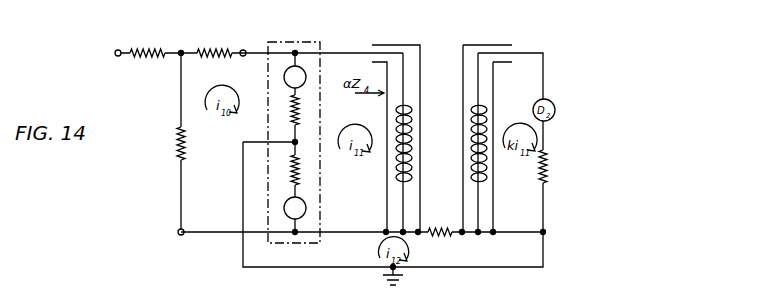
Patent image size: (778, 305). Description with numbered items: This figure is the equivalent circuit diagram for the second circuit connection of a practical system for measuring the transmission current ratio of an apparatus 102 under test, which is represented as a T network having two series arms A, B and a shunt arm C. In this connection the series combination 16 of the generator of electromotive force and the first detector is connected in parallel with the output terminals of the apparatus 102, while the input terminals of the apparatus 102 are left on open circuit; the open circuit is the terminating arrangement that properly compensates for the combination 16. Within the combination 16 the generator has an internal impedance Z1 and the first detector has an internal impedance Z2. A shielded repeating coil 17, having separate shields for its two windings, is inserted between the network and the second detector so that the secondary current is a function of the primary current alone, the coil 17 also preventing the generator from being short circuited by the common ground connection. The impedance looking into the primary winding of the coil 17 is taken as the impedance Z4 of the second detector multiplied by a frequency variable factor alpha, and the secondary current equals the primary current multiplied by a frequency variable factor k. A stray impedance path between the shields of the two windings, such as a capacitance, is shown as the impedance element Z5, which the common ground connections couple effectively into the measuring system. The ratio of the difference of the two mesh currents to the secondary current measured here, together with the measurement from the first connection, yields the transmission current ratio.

The apparatus to be tested 102 is at (205, 26).
The series combination of generator and first detector 16 is at (279, 41).
The shielded repeating coil 17 is at (458, 104).
The series arm of T network A is at (147, 41).
The series arm of T network B is at (214, 41).
The shunt arm of T network C is at (172, 145).
The internal impedance of generator Z1 is at (303, 166).
The internal impedance of first detector Z2 is at (287, 105).
The impedance of second detector Z4 is at (549, 165).
The stray impedance element Z5 is at (434, 228).